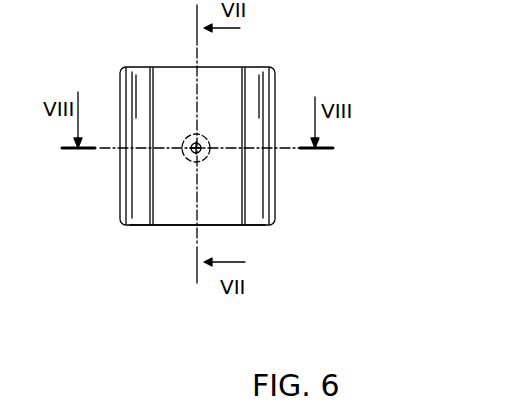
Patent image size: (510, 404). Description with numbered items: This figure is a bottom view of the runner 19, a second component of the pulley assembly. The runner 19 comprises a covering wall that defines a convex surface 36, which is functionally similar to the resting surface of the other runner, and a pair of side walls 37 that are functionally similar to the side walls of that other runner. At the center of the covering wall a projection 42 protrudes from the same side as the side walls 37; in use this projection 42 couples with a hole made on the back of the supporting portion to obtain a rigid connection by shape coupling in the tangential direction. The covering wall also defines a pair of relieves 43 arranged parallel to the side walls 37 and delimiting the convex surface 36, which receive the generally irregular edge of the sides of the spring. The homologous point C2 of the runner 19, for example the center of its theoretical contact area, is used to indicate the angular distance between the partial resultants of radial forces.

The runner 19 is at (165, 227).
The convex surface 36 is at (172, 102).
The side walls 37 is at (126, 84).
The projection 42 is at (205, 153).
The relieves 43 is at (250, 82).
The homologous point C2 is at (201, 144).